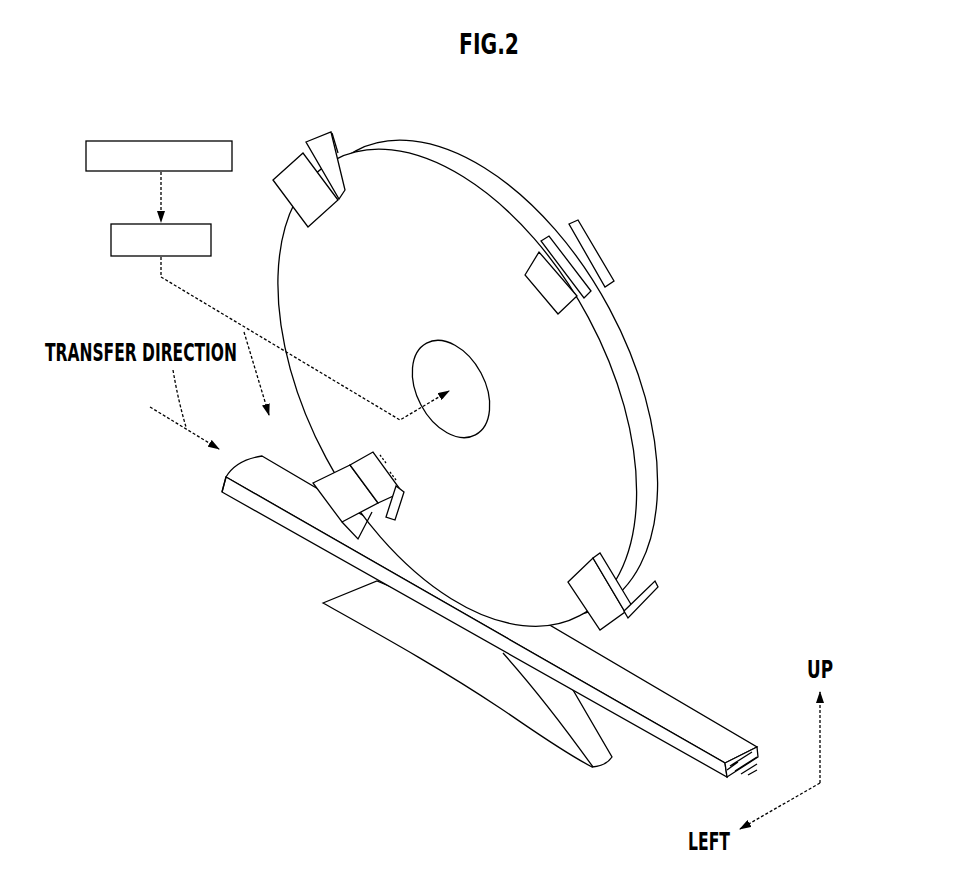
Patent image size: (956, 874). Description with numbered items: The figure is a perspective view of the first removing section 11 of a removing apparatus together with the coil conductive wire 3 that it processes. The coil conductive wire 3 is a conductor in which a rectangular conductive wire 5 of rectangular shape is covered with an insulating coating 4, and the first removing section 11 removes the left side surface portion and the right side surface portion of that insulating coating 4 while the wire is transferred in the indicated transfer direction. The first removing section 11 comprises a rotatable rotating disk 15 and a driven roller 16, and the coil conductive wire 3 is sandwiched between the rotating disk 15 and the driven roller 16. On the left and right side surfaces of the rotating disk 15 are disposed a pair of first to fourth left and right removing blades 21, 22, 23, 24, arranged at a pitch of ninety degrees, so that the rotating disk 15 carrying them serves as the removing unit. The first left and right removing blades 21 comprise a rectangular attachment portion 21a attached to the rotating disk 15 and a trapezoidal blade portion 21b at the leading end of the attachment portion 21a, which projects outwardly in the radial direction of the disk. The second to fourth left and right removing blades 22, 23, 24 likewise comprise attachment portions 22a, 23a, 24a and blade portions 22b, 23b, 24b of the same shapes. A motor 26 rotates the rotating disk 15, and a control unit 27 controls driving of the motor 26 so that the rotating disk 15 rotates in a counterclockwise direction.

The coil conductive wire 3 is at (494, 602).
The insulating coating 4 is at (733, 762).
The rectangular conductive wire 5 is at (705, 668).
The first removing section 11 is at (483, 383).
The rotating disk 15 is at (613, 400).
The driven roller 16 is at (453, 668).
The first left and right removing blades 21 is at (374, 524).
The attachment portion 21a is at (377, 518).
The blade portion 21b is at (323, 527).
The second left and right removing blades 22 is at (311, 199).
The attachment portion 22a is at (320, 168).
The blade portion 22b is at (282, 190).
The third left and right removing blades 23 is at (538, 270).
The attachment portion 23a is at (559, 316).
The blade portion 23b is at (540, 258).
The fourth left and right removing blades 24 is at (592, 613).
The attachment portion 24a is at (568, 590).
The blade portion 24b is at (597, 618).
The motor 26 is at (110, 241).
The control unit 27 is at (85, 157).